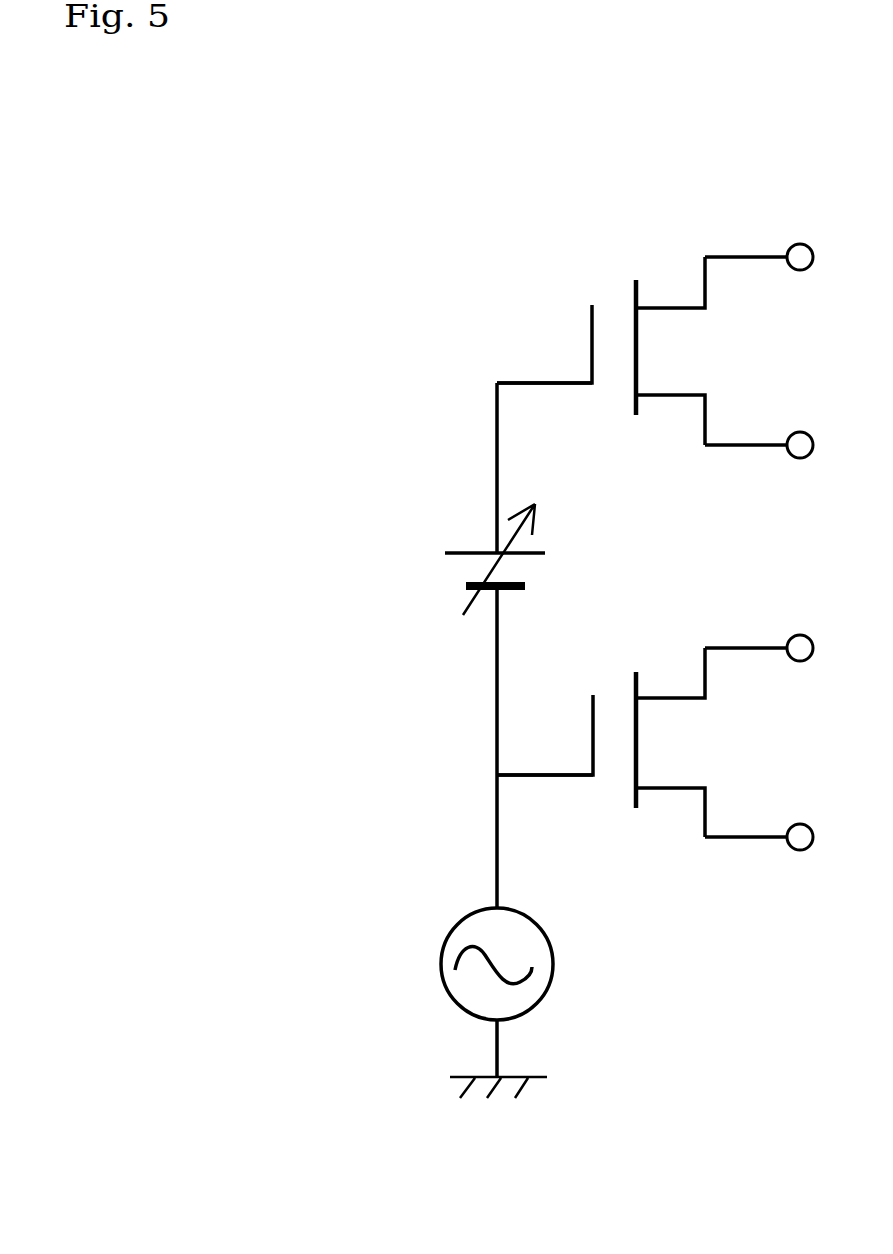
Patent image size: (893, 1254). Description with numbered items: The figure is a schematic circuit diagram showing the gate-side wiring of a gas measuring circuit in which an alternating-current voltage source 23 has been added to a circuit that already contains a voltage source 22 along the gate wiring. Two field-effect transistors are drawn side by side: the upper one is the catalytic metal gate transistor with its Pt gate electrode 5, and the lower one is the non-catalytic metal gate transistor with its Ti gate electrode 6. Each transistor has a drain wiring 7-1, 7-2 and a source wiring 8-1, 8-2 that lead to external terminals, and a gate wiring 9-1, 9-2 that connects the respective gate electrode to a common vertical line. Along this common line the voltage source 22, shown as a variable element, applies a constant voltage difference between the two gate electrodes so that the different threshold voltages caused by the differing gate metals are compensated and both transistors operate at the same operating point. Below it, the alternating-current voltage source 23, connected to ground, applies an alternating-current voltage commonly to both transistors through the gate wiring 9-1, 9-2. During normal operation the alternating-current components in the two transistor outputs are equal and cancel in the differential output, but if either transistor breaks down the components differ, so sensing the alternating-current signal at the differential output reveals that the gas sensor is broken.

The Pt gate electrode 5 is at (592, 340).
The Ti gate electrode 6 is at (593, 725).
The drain wiring 7-1 is at (730, 256).
The drain wiring 7-2 is at (728, 647).
The source wiring 8-1 is at (753, 445).
The source wiring 8-2 is at (752, 837).
The gate wiring 9-1 is at (535, 380).
The gate wiring 9-2 is at (547, 778).
The voltage source 22 is at (425, 553).
The alternating-current voltage source 23 is at (415, 945).